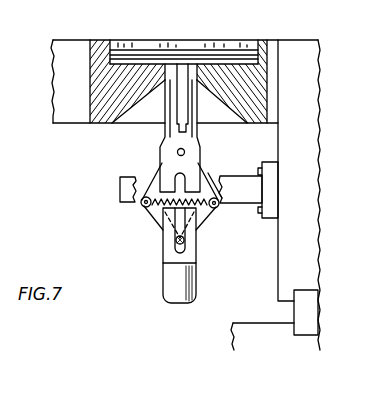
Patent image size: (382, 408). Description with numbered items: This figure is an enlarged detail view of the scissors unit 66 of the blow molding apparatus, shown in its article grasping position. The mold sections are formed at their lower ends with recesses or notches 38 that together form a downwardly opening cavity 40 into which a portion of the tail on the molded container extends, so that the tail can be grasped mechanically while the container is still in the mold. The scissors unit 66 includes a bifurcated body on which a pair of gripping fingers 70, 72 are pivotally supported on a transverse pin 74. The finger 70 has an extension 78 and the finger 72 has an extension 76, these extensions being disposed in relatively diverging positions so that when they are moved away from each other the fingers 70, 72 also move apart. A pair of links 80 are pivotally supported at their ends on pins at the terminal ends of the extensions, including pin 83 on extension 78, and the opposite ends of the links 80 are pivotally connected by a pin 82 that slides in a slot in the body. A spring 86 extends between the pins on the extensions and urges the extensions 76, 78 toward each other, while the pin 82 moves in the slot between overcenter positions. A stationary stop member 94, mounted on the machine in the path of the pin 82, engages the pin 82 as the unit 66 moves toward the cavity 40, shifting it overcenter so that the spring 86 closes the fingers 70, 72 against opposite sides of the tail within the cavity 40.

The recesses or notches 38 is at (118, 124).
The cavity 40 is at (147, 117).
The scissors unit 66 is at (107, 218).
The gripping finger 70 is at (164, 82).
The gripping finger 72 is at (199, 78).
The transverse pin 74 is at (185, 152).
The extension 76 is at (152, 176).
The extension 78 is at (203, 180).
The links 80 is at (155, 220).
The pin 82 is at (175, 243).
The pin 83 is at (224, 199).
The spring 86 is at (217, 207).
The stationary stop member 94 is at (120, 189).